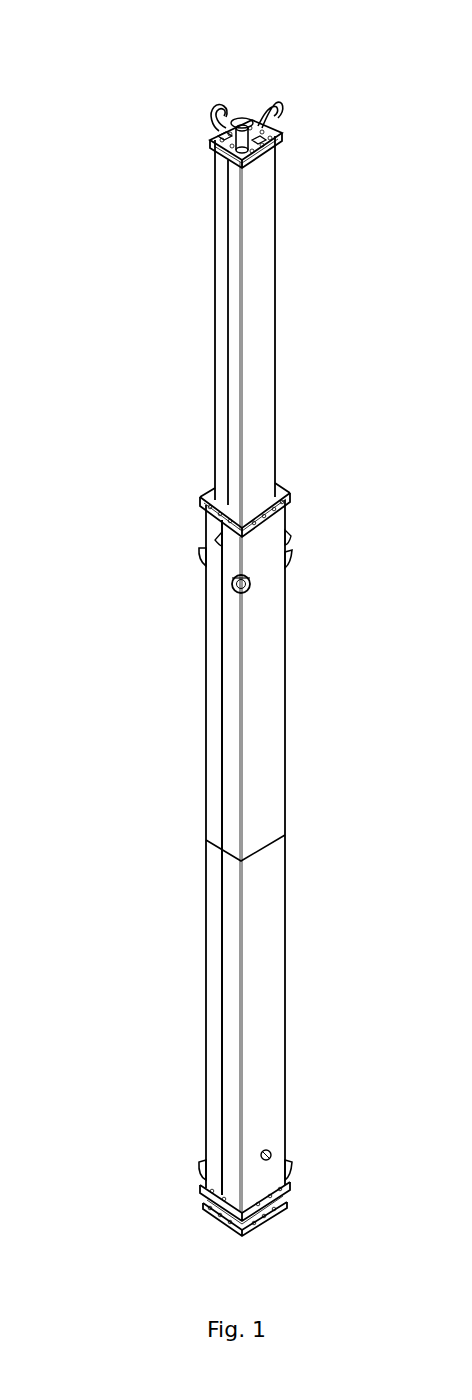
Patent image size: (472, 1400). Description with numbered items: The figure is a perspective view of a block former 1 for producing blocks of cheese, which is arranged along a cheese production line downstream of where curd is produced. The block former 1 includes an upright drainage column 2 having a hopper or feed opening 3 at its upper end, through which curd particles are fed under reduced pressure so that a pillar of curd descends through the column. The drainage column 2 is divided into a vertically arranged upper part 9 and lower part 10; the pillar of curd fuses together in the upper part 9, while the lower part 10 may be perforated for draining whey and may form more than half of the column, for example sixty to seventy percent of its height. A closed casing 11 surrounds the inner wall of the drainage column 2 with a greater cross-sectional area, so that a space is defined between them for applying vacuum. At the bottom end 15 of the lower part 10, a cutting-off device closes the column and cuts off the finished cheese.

The block former 1 is at (148, 238).
The drainage column 2 is at (203, 519).
The feed opening 3 is at (235, 91).
The upper part 9 is at (222, 369).
The lower part 10 is at (213, 790).
The closed casing 11 is at (218, 663).
The bottom end 15 is at (195, 1204).